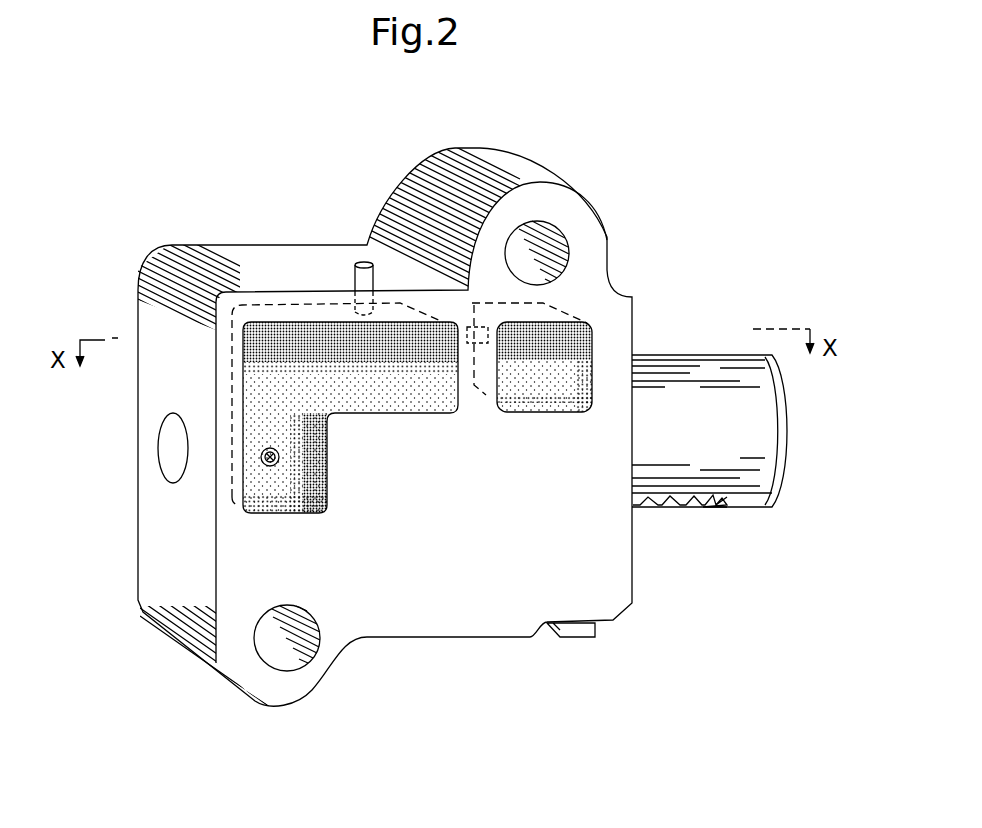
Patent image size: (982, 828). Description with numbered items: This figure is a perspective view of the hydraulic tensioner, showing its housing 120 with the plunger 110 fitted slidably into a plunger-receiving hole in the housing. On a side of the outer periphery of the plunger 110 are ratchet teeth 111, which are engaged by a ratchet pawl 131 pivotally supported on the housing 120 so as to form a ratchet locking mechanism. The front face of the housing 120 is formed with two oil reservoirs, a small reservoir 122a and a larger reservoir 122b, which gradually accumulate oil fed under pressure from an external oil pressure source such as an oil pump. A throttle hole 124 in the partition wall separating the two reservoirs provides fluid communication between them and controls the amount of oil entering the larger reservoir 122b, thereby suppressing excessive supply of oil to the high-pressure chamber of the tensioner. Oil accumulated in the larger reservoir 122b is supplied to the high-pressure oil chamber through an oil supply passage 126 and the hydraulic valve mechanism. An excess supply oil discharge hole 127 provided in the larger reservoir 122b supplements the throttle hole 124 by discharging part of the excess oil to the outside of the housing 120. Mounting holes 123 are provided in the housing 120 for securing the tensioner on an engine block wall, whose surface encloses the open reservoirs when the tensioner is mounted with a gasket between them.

The plunger 110 is at (703, 380).
The ratchet teeth 111 is at (677, 503).
The housing 120 is at (470, 608).
The small reservoir 122a is at (585, 330).
The larger reservoir 122b is at (262, 372).
The mounting hole 123 is at (516, 235).
The throttle hole 124 is at (472, 343).
The oil supply passage 126 is at (261, 463).
The excess supply oil discharge hole 127 is at (350, 277).
The ratchet pawl 131 is at (593, 637).